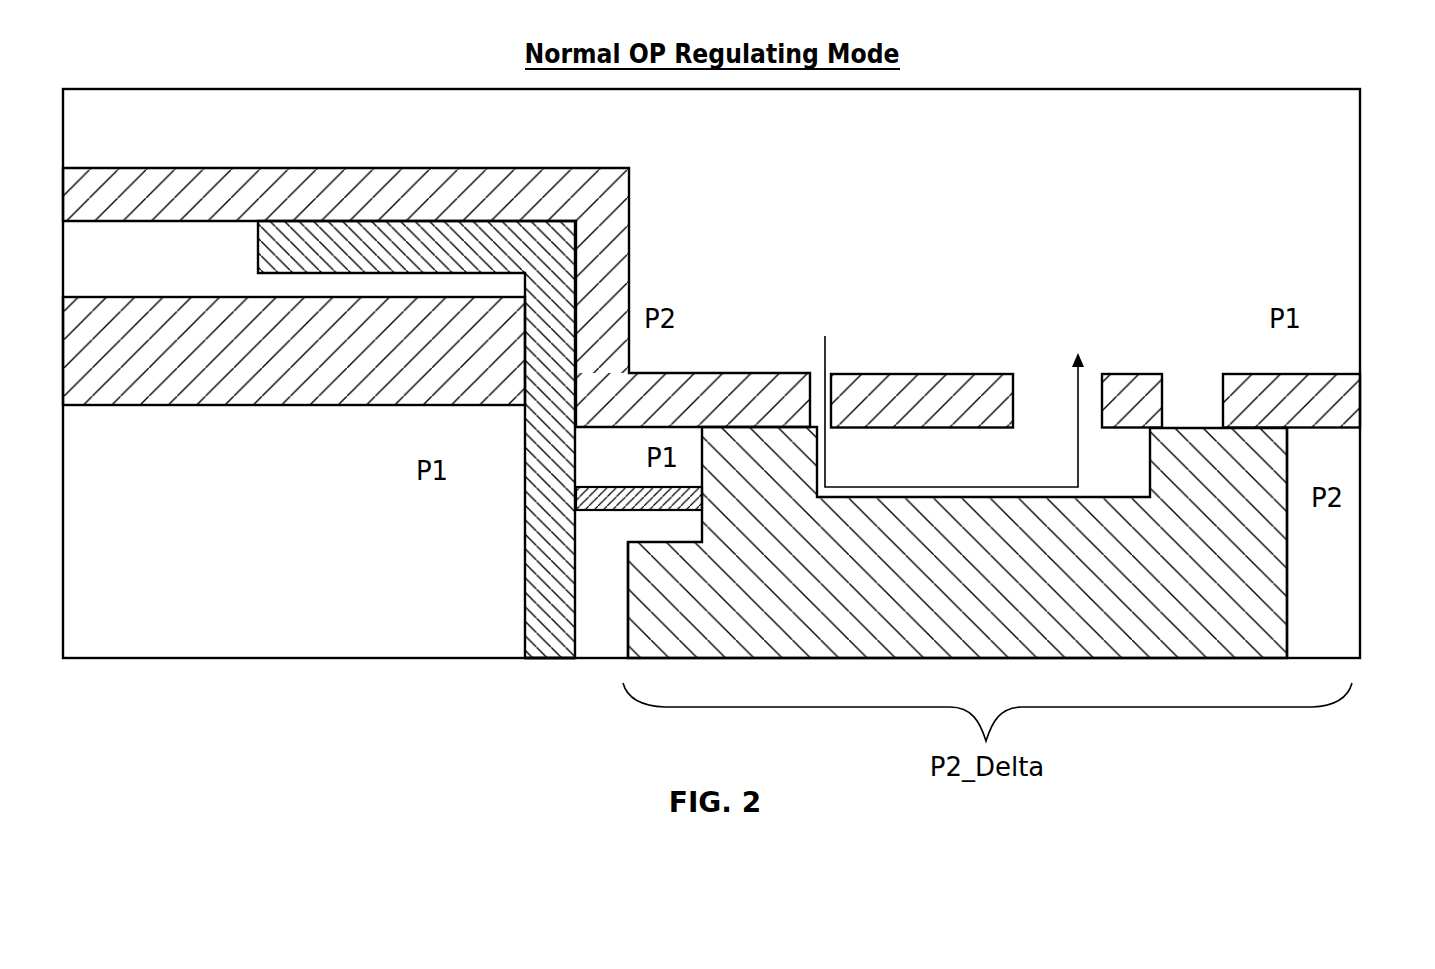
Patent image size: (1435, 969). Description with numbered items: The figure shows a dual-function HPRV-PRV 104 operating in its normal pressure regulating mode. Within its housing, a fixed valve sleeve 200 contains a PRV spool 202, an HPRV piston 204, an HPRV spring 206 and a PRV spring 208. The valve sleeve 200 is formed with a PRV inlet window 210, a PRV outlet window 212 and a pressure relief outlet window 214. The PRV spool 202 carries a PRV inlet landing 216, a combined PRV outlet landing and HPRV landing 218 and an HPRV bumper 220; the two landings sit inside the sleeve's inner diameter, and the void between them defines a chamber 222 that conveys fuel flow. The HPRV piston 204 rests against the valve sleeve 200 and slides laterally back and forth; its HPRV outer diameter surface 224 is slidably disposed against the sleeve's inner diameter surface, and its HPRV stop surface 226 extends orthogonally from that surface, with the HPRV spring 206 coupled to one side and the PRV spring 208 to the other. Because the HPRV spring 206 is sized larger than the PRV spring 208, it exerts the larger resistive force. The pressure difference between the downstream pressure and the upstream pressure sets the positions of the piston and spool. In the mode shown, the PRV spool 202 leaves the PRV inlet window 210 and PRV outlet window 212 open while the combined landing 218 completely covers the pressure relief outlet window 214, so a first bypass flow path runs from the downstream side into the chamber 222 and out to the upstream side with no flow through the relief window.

The dual-function HPRV-PRV 104 is at (133, 42).
The valve sleeve 200 is at (135, 167).
The PRV spool 202 is at (1288, 581).
The HPRV piston 204 is at (372, 439).
The HPRV spring 206 is at (135, 296).
The PRV spring 208 is at (648, 486).
The PRV inlet window 210 is at (816, 388).
The PRV outlet window 212 is at (1039, 386).
The pressure relief outlet window 214 is at (1189, 382).
The PRV inlet landing 216 is at (736, 499).
The combined PRV outlet landing and HPRV landing 218 is at (1186, 479).
The HPRV bumper 220 is at (628, 620).
The chamber 222 is at (936, 476).
The HPRV outer diameter surface 224 is at (257, 240).
The HPRV stop surface 226 is at (535, 648).